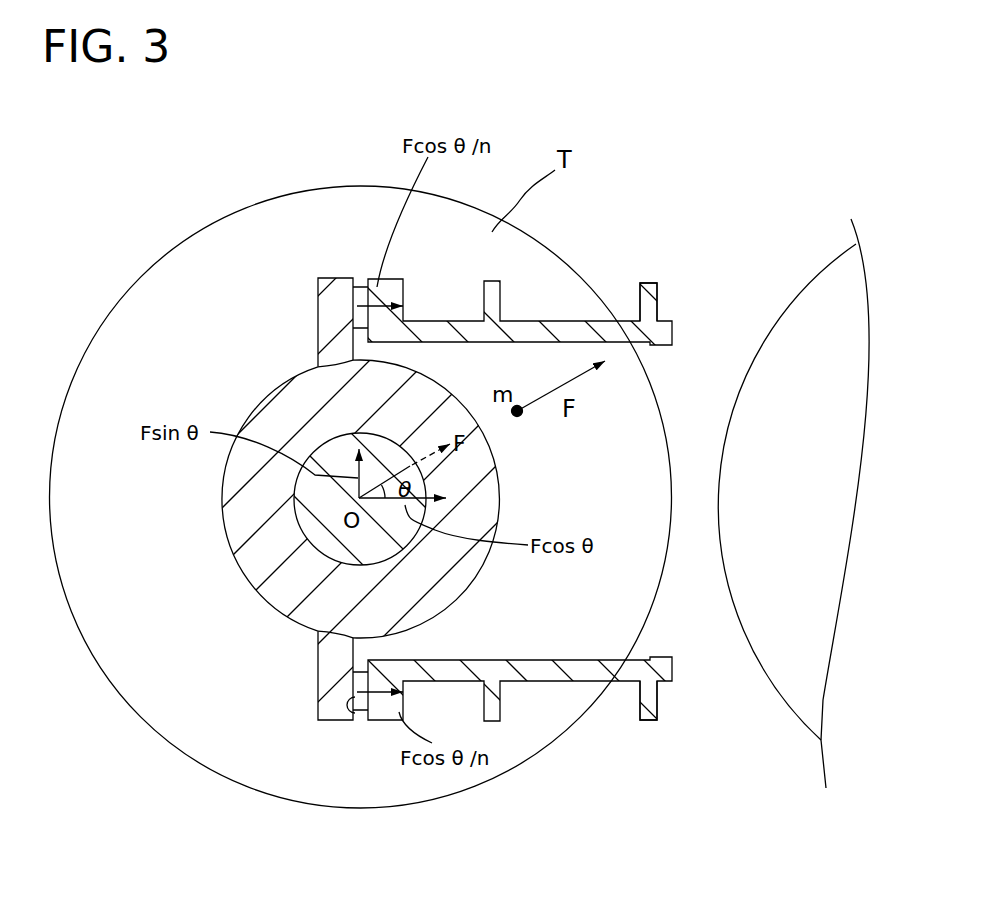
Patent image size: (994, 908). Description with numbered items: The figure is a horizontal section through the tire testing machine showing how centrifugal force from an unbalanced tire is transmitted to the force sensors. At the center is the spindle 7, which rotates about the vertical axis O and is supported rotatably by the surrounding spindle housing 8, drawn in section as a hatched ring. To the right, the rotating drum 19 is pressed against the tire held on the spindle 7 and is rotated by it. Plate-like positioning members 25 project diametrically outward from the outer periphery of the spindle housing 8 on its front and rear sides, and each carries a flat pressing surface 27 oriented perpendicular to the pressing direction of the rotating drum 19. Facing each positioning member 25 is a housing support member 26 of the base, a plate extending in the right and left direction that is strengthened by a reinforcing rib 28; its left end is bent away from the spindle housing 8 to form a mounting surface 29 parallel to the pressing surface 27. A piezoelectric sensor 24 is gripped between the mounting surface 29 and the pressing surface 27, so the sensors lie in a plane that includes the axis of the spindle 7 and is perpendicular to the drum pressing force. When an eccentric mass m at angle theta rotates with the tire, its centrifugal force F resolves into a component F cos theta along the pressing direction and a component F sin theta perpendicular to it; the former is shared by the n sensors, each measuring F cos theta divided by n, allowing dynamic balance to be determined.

The spindle 7 is at (297, 520).
The spindle housing 8 is at (258, 593).
The rotating drum 19 is at (823, 297).
The piezoelectric sensor 24 is at (362, 705).
The positioning member 25 is at (327, 317).
The housing support member 26 is at (560, 327).
The pressing surface 27 is at (353, 712).
The reinforcing rib 28 is at (650, 308).
The mounting surface 29 is at (364, 287).